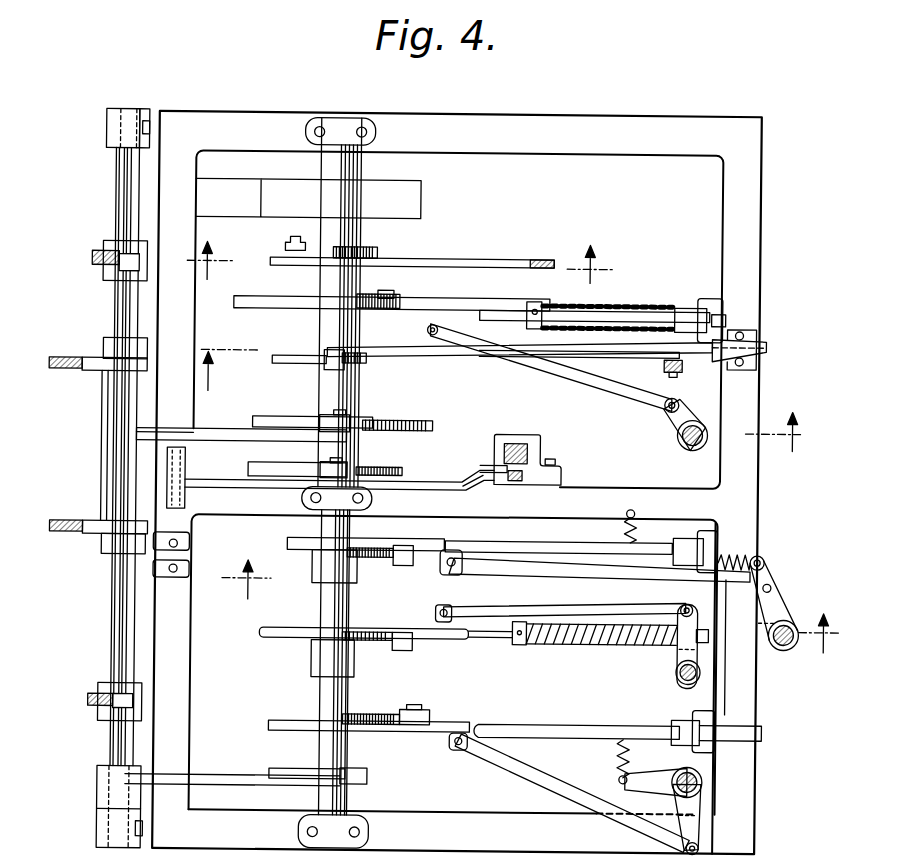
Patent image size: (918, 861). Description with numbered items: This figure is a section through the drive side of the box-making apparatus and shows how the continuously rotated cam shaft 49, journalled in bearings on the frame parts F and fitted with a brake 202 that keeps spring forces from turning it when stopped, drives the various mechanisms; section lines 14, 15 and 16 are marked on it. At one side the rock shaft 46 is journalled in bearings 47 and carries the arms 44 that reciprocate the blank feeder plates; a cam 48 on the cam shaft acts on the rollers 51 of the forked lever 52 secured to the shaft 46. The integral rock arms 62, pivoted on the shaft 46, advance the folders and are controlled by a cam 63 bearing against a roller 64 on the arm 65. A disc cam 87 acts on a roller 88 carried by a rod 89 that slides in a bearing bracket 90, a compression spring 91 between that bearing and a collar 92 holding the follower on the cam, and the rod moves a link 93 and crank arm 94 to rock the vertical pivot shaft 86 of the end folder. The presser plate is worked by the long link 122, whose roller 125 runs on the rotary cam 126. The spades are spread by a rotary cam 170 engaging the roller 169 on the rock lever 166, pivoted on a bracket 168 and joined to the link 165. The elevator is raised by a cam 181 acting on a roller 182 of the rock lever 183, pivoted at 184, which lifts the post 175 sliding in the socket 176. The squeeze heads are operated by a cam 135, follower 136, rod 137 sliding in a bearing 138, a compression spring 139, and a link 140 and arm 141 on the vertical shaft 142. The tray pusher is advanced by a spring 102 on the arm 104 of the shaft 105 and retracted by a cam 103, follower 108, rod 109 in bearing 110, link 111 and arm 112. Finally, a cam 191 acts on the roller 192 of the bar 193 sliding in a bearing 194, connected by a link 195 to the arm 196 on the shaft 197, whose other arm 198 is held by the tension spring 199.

The frame parts F is at (756, 280).
The brake 202 is at (418, 207).
The cam shaft 49 is at (345, 797).
The shaft 46 is at (112, 636).
The bearings 47 is at (103, 132).
The arms 44 is at (97, 265).
The rock arms 62 is at (80, 378).
The section line 14— 14 is at (395, 262).
The section line 15— 15 is at (495, 400).
The section line 16— 16 is at (530, 597).
The roller 125 is at (292, 244).
The rotary cam 126 is at (378, 252).
The long link 122 is at (487, 250).
The rod 89 is at (410, 312).
The disc cam 87 is at (381, 292).
The cam following roller 88 is at (396, 296).
The compression spring 91 is at (622, 306).
The collar 92 is at (536, 302).
The bearing bracket 90 is at (696, 306).
The link 93 is at (545, 372).
The crank arm 94 is at (664, 410).
The pivot 86 is at (678, 440).
The rock lever 166 is at (445, 358).
The rotary cam 170 is at (290, 363).
The cam following roller 169 is at (325, 370).
The link 165 is at (674, 371).
The bracket 168 is at (767, 347).
The roller 64 is at (350, 418).
The cam 63 is at (390, 420).
The arm 65 is at (246, 437).
The roller 182 is at (350, 467).
The cam 181 is at (402, 470).
The pivot 184 is at (190, 488).
The rock lever 183 is at (410, 488).
The socket 176 is at (558, 438).
The post 175 is at (516, 442).
The cam 191 is at (365, 548).
The roller 192 is at (455, 570).
The bar 193 is at (540, 547).
The bearing 194 is at (690, 536).
The arm 198 is at (755, 565).
The tension spring 199 is at (762, 554).
The arm 196 is at (783, 592).
The shaft 197 is at (786, 648).
The link 195 is at (600, 578).
The link 140 is at (520, 612).
The arm 141 is at (669, 649).
The shaft 142 is at (702, 673).
The bearing 138 is at (682, 640).
The compression spring 139 is at (578, 646).
The rod 137 is at (520, 645).
The cam 135 is at (262, 640).
The cam follower 136 is at (414, 642).
The cam 103 is at (375, 714).
The cam follower 108 is at (432, 712).
The rod 109 is at (508, 723).
The bearing 110 is at (677, 718).
The link 111 is at (483, 758).
The arm 112 is at (702, 828).
The shaft 105 is at (706, 778).
The arm 104 is at (655, 766).
The spring 102 is at (618, 752).
The cam 48 is at (290, 769).
The rollers 51 is at (372, 776).
The lever 52 is at (230, 788).